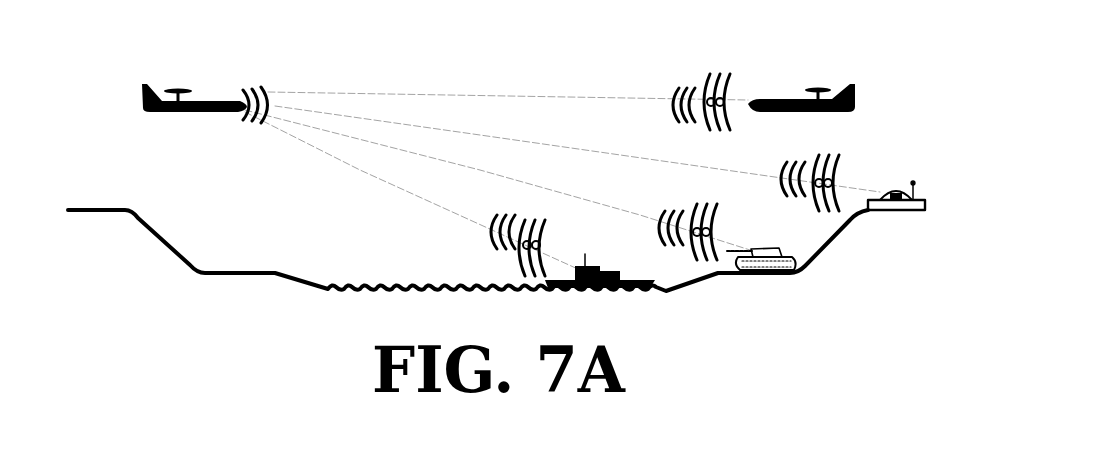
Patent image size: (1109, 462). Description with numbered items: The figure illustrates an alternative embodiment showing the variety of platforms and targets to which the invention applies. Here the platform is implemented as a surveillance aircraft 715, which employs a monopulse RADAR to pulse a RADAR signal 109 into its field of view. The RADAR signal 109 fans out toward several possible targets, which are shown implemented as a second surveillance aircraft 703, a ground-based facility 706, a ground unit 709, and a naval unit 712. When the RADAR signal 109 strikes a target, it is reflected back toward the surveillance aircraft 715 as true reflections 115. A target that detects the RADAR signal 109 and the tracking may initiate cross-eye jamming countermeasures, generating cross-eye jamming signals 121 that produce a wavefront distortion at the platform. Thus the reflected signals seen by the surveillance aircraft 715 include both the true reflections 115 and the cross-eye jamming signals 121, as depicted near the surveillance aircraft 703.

The surveillance aircraft 715 is at (140, 88).
The RADAR signal 109 is at (255, 93).
The true reflections 115 is at (674, 88).
The cross-eye jamming signals 121 is at (717, 73).
The surveillance aircraft 703 is at (852, 86).
The ground-based facility 706 is at (896, 190).
The ground unit 709 is at (782, 275).
The naval unit 712 is at (661, 289).